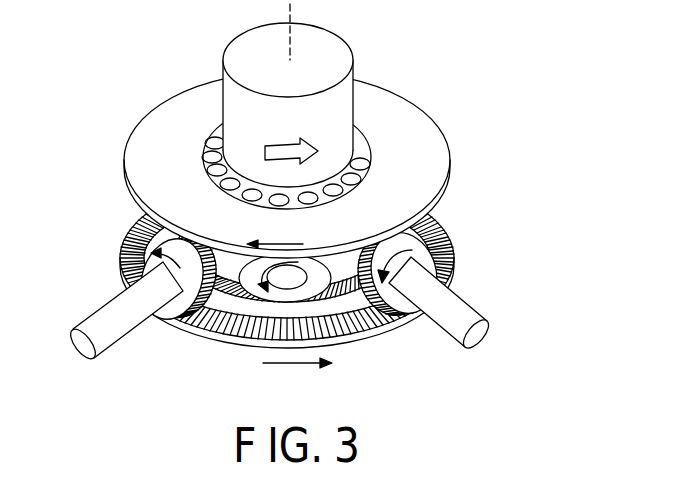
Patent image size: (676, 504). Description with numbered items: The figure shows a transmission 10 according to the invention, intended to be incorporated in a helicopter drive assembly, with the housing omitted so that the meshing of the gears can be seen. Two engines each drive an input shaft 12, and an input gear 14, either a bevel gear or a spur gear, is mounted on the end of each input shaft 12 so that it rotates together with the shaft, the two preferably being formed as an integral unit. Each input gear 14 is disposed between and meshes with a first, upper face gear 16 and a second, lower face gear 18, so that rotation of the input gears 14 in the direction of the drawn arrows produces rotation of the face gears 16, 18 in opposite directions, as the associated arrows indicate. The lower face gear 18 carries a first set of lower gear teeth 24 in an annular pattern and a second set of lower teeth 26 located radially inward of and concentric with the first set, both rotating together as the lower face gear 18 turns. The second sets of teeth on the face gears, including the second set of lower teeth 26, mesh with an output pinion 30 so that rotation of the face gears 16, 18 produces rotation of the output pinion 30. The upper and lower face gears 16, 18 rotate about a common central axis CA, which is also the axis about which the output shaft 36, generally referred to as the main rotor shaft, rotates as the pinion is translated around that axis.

The transmission 10 is at (296, 206).
The input shaft 12 is at (118, 330).
The input gear 14 is at (188, 304).
The first face gear 16 is at (430, 155).
The second face gear 18 is at (347, 292).
The first set of lower gear teeth 24 is at (258, 279).
The second set of lower teeth 26 is at (388, 304).
The output pinion 30 is at (307, 295).
The output shaft 36 is at (335, 108).
The central axis CA is at (301, 52).